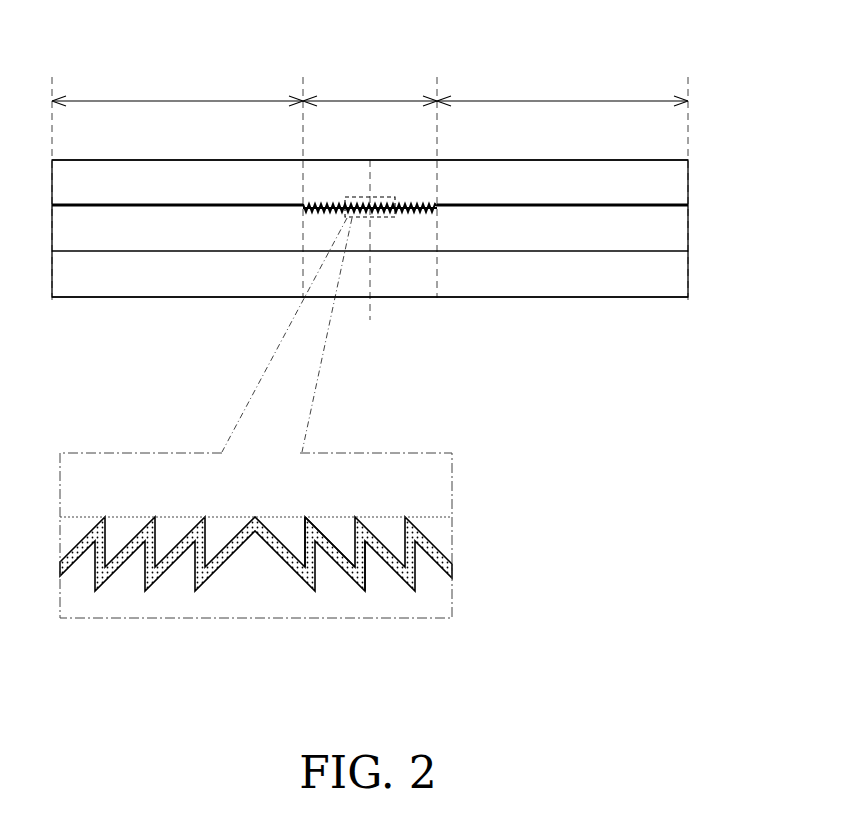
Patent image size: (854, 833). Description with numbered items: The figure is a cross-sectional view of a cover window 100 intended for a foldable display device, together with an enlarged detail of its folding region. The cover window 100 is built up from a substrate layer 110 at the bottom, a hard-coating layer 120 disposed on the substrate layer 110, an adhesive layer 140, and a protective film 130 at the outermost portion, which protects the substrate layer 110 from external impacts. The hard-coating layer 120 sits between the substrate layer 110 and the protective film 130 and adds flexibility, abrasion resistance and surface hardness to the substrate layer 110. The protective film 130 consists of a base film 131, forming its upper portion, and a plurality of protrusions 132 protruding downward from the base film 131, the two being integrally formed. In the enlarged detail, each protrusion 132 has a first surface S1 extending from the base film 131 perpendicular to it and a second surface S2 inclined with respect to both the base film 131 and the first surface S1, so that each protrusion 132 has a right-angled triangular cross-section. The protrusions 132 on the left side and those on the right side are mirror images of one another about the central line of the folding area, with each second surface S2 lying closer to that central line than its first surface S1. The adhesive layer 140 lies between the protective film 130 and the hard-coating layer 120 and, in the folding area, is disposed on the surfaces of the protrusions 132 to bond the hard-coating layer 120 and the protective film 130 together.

The cover window 100 is at (634, 22).
The substrate layer 110 is at (672, 280).
The hard-coating layer 120 is at (672, 233).
The protective film 130 is at (672, 180).
The base film 131 is at (432, 470).
The protrusions 132 is at (333, 535).
The adhesive layer 140 is at (672, 205).
The first surface S1 is at (365, 543).
The second surface S2 is at (332, 553).